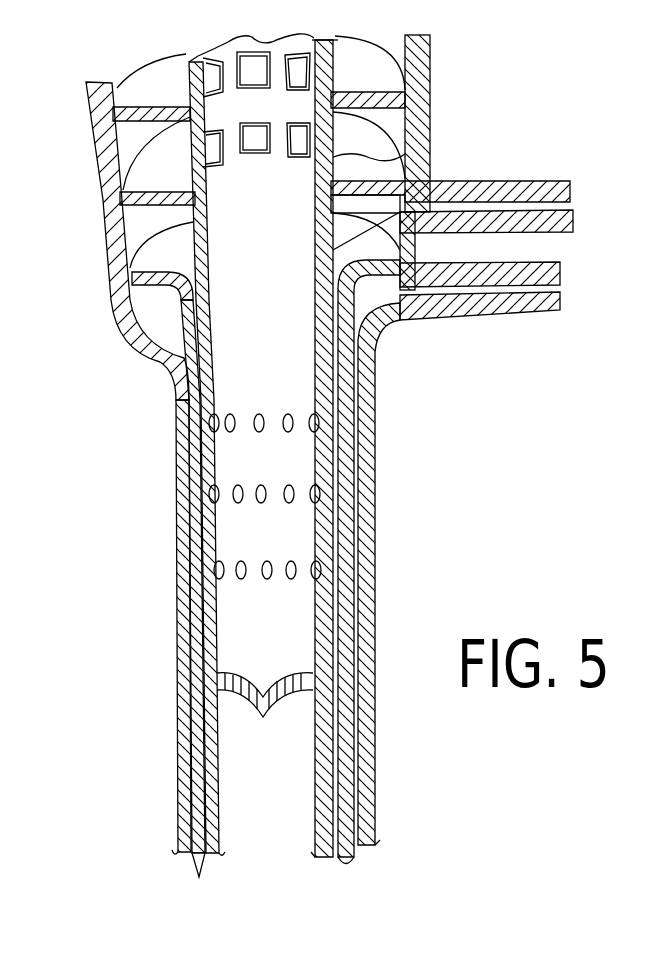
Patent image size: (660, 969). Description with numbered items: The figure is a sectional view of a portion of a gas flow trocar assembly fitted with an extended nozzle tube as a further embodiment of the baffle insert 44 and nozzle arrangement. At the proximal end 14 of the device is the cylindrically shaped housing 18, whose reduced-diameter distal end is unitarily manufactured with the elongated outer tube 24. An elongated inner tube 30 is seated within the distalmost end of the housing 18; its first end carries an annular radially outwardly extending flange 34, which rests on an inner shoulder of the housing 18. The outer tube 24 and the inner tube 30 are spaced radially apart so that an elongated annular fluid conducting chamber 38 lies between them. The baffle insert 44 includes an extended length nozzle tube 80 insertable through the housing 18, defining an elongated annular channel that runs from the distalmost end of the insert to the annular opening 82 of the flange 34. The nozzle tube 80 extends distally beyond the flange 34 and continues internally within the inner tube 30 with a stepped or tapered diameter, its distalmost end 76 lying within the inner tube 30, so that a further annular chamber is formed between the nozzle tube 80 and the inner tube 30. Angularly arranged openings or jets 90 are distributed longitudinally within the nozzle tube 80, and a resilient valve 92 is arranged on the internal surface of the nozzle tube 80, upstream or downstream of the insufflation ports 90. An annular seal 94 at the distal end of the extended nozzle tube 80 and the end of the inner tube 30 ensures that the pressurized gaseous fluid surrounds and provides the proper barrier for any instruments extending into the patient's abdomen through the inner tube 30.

The proximal end 14 is at (425, 97).
The housing 18 is at (103, 224).
The outer tube 24 is at (178, 568).
The inner tube 30 is at (197, 663).
The annular flange 34 is at (400, 268).
The fluid conducting chamber 38 is at (185, 630).
The baffle insert 44 is at (427, 160).
The extended nozzle tube / distalmost end 76 is at (335, 614).
The nozzle tube 80 is at (445, 184).
The annular opening 82 is at (190, 281).
The openings or jets 90 is at (267, 563).
The resilient valve 92 is at (217, 692).
The annular seal 94 is at (220, 870).